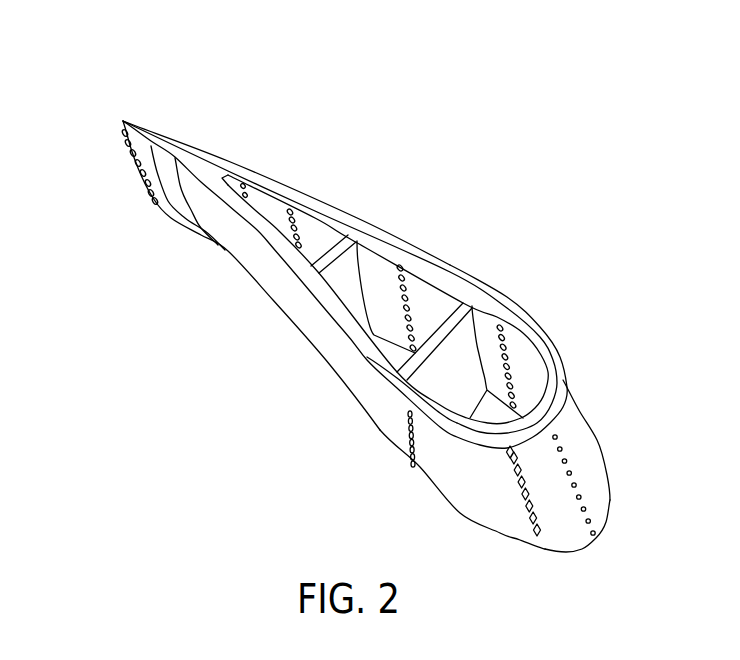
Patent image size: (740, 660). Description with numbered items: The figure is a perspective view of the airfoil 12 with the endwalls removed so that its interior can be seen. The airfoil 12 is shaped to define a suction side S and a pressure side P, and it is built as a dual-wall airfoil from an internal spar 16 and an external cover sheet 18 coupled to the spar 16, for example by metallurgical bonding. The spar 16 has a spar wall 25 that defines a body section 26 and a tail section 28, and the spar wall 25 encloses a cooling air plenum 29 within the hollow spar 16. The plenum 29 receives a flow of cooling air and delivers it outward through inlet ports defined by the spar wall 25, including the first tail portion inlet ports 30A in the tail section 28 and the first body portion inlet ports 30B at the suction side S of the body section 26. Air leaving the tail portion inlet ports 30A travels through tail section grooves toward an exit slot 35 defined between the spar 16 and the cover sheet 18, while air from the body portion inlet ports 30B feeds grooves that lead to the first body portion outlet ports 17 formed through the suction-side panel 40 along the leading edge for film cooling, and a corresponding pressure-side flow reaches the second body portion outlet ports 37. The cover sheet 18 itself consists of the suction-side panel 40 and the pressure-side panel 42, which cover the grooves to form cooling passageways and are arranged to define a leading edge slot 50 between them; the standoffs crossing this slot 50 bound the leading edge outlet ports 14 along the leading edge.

The airfoil 12 is at (148, 80).
The leading edge outlet ports 14 is at (563, 551).
The internal spar 16 is at (409, 240).
The first body portion outlet ports 17 is at (577, 435).
The external cover sheet 18 is at (330, 394).
The spar wall 25 is at (486, 300).
The body section 26 is at (459, 271).
The tail section 28 is at (194, 138).
The cooling air plenum 29 is at (376, 257).
The first tail portion inlet ports 30A is at (247, 167).
The first body portion inlet ports 30B is at (291, 197).
The exit slot 35 is at (109, 145).
The second body portion outlet ports 37 is at (397, 477).
The suction-side panel 40 is at (590, 472).
The pressure-side panel 42 is at (466, 500).
The leading edge slot 50 is at (538, 545).
The suction side S is at (558, 306).
The pressure side P is at (351, 434).